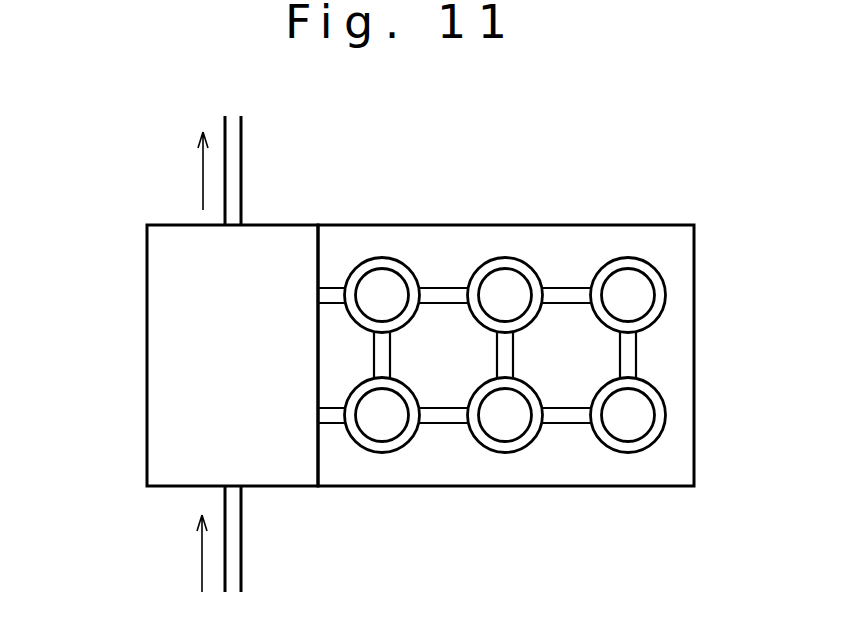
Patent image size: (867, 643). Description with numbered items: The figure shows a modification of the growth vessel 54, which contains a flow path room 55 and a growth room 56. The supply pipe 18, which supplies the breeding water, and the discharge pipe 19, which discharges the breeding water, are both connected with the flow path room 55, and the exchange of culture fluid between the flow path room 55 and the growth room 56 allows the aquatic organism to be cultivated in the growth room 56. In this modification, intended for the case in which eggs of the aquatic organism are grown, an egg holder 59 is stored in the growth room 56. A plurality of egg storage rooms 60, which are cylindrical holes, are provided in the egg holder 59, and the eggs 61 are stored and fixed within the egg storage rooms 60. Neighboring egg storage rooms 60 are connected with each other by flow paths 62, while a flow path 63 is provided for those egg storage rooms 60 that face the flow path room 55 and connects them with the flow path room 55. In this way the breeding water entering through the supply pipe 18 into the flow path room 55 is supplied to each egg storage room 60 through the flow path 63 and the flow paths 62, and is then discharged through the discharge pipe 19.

The supply pipe 18 is at (241, 548).
The discharge pipe 19 is at (242, 142).
The growth vessel 54 is at (567, 178).
The flow path room 55 is at (185, 391).
The growth room 56 is at (673, 259).
The egg holder 59 is at (424, 240).
The egg storage room 60 is at (640, 443).
The egg 61 is at (630, 417).
The flow path 62 is at (446, 293).
The flow path 63 is at (331, 292).